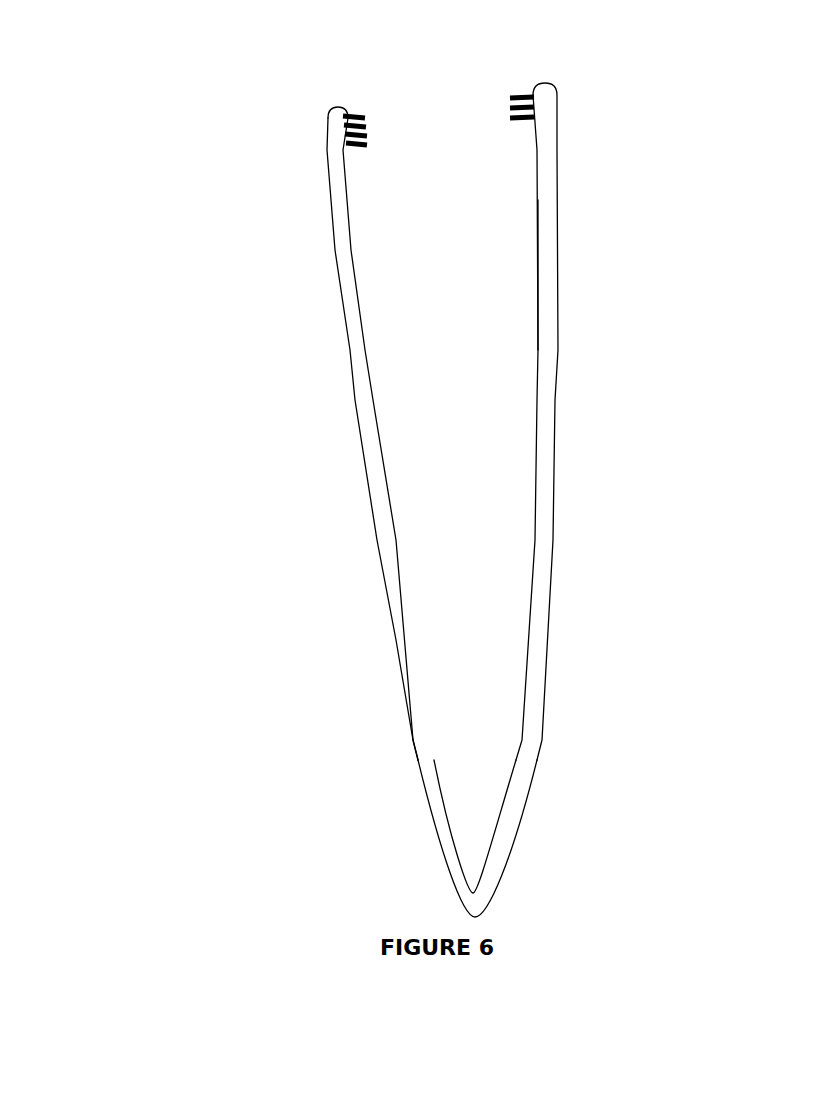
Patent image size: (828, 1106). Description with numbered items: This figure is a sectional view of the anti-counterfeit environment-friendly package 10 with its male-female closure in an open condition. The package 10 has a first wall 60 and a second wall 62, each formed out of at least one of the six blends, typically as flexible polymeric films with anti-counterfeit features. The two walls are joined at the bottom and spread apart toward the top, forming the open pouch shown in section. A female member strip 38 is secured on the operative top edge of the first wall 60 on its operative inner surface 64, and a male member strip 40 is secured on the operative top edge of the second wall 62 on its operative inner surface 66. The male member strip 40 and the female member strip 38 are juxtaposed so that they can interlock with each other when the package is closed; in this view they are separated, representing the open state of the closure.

The anti-counterfeit environment-friendly package 10 is at (371, 466).
The female member strip 38 is at (352, 112).
The male member strip 40 is at (518, 98).
The first wall 60 is at (355, 445).
The second wall 62 is at (560, 430).
The operative inner surface of the first wall 64 is at (393, 492).
The operative inner surface of the second wall 66 is at (538, 292).